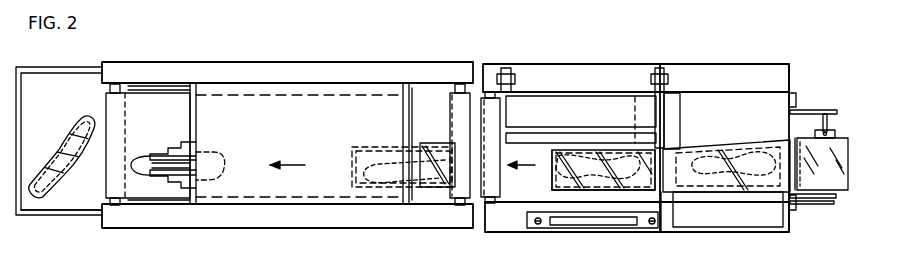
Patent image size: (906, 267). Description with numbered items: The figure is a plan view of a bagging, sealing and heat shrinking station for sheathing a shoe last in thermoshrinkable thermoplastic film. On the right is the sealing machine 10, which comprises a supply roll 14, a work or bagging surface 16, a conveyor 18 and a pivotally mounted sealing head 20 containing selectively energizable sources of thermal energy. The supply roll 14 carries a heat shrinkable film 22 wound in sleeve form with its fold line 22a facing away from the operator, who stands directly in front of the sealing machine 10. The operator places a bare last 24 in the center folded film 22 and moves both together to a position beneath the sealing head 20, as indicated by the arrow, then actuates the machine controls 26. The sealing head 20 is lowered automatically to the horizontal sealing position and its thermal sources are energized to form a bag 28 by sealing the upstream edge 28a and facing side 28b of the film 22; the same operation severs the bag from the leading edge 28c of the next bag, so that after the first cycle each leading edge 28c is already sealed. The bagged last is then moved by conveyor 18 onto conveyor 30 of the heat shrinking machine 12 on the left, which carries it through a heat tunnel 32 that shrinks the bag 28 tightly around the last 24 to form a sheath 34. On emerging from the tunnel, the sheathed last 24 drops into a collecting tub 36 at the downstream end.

The sealing machine 10 is at (598, 56).
The heat shrinking machine 12 is at (270, 55).
The supply roll 14 is at (840, 198).
The work or bagging surface 16 is at (754, 212).
The conveyor 18 is at (545, 190).
The pivotally mounted sealing head 20 is at (550, 127).
The heat shrinkable film 22 is at (824, 152).
The fold line 22a is at (765, 120).
The last 24 is at (80, 126).
The machine controls 26 is at (547, 228).
The bag 28 is at (432, 150).
The upstream edge 28a is at (656, 166).
The facing side 28b is at (588, 190).
The leading edge 28c is at (552, 170).
The conveyor 30 is at (430, 105).
The heat tunnel 32 is at (230, 107).
The sheath 34 is at (45, 190).
The collecting tub 36 is at (86, 195).